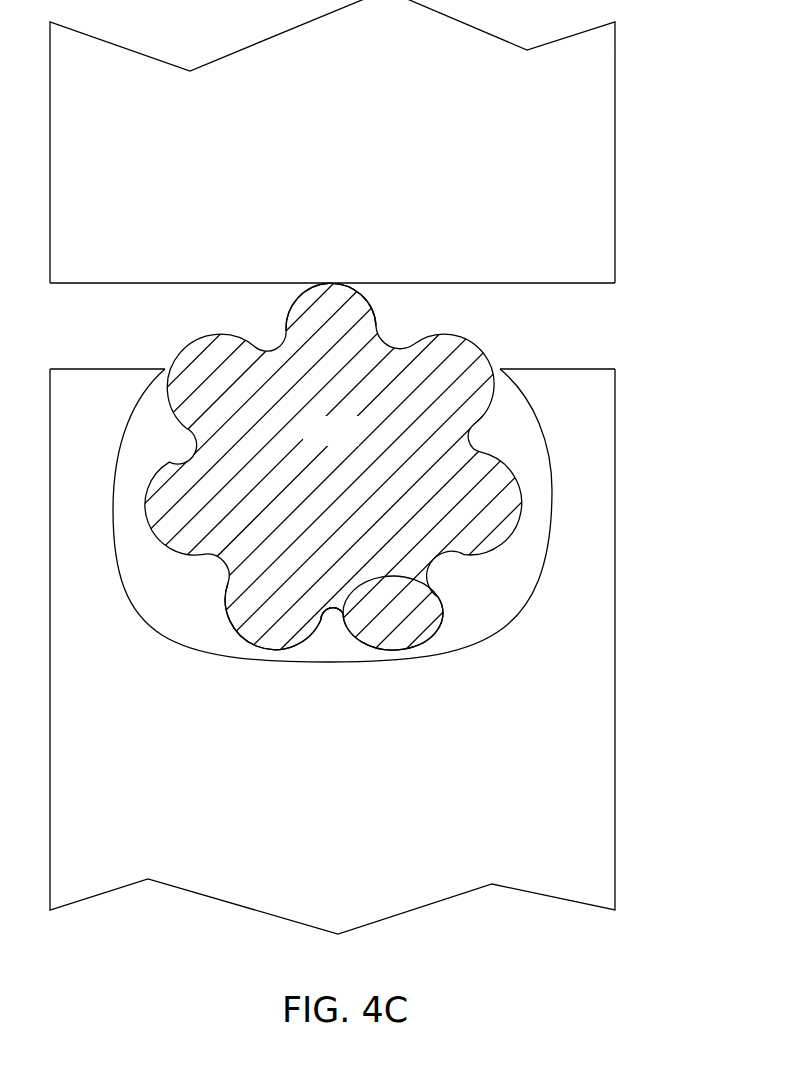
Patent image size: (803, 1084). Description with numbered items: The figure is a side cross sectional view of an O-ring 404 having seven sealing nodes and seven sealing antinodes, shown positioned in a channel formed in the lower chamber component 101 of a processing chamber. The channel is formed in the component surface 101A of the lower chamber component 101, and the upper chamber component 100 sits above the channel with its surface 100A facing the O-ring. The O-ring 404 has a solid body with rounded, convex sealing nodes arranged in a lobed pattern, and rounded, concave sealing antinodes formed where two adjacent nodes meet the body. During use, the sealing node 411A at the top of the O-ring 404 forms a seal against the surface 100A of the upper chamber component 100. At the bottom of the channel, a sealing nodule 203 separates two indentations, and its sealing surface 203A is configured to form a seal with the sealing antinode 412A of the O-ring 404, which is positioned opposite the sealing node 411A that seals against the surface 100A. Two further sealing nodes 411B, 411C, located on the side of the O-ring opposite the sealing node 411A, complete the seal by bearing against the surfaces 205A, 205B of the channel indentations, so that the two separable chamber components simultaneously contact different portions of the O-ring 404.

The upper chamber component 100 is at (236, 137).
The surface of the upper chamber component 100A is at (562, 284).
The lower chamber component 101 is at (346, 853).
The component surface 101A is at (562, 368).
The O-ring 404 is at (314, 443).
The sealing node 411A is at (333, 272).
The sealing node 411B is at (237, 638).
The sealing node 411C is at (445, 613).
The sealing antinode 412A is at (440, 578).
The sealing nodule 203 is at (336, 628).
The sealing surface 203A is at (329, 616).
The surface of the channel 205A is at (150, 630).
The surface of the channel 205B is at (485, 663).